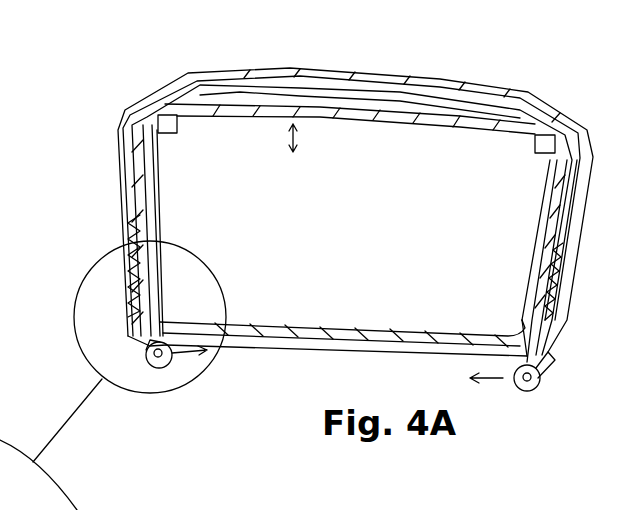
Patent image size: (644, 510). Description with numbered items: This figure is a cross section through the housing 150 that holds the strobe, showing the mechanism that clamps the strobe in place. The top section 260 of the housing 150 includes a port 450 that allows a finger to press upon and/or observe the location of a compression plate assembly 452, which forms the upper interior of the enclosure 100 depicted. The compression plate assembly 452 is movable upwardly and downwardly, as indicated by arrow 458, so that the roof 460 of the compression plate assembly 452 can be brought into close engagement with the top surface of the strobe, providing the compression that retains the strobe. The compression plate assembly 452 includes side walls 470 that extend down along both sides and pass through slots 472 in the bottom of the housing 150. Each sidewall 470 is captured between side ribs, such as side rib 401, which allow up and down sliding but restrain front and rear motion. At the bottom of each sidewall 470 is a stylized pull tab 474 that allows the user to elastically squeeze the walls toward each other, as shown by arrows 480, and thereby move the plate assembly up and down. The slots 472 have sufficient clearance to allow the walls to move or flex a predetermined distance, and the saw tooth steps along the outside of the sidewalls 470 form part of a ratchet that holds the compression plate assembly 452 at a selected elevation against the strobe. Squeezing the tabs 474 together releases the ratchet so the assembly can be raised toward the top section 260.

The eyewear frame / goggle 100 is at (505, 76).
The housing 150 is at (590, 185).
The top section of the housing 260 is at (252, 70).
The side rib 401 is at (168, 230).
The port 450 is at (375, 72).
The compression plate assembly 452 is at (372, 123).
The arrow 458 is at (298, 143).
The roof of the compression plate assembly 460 is at (433, 123).
The side wall 470 is at (158, 183).
The slot 472 is at (180, 321).
The bottom pull tab 474 is at (174, 362).
The arrows 480 is at (210, 353).